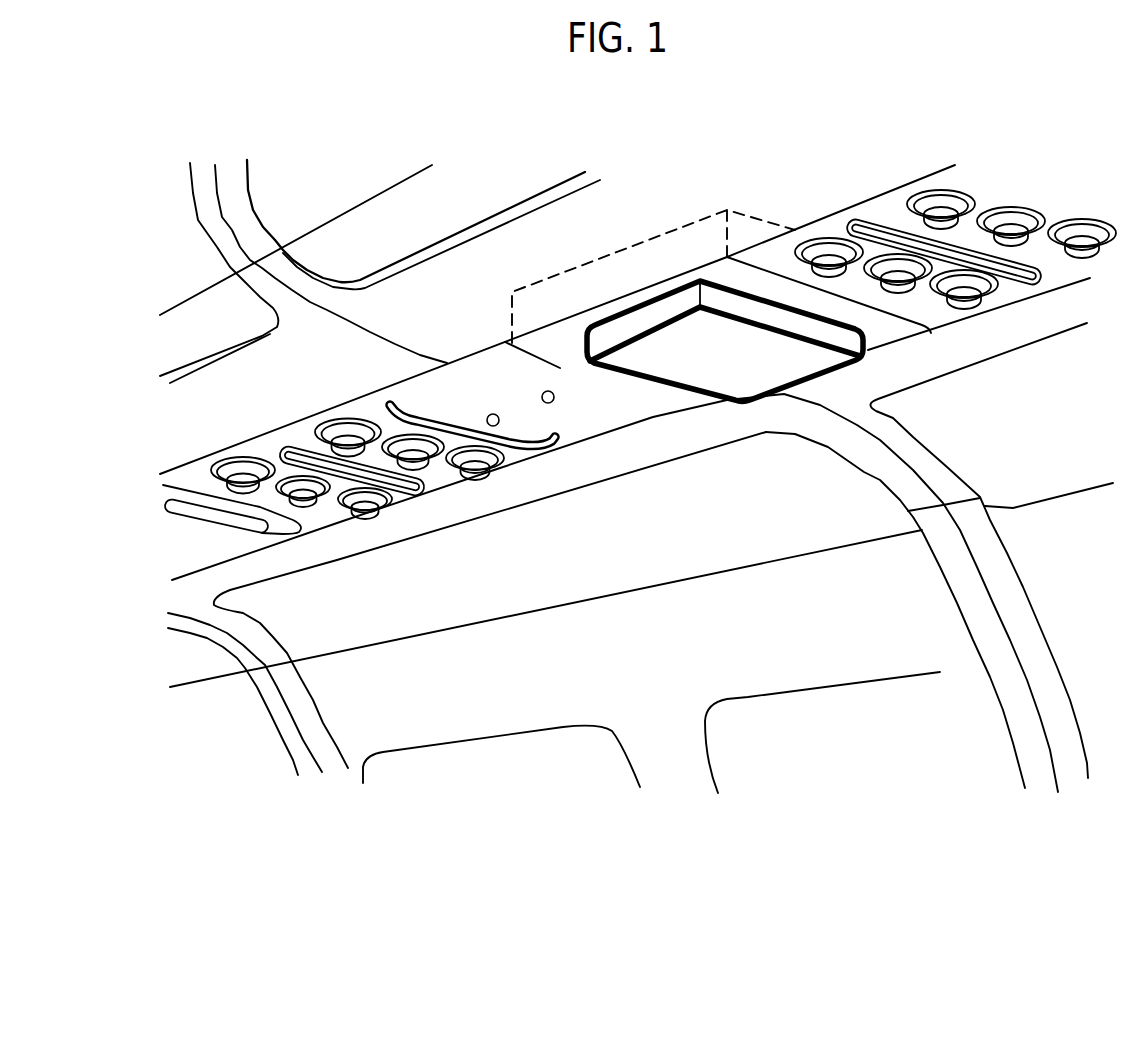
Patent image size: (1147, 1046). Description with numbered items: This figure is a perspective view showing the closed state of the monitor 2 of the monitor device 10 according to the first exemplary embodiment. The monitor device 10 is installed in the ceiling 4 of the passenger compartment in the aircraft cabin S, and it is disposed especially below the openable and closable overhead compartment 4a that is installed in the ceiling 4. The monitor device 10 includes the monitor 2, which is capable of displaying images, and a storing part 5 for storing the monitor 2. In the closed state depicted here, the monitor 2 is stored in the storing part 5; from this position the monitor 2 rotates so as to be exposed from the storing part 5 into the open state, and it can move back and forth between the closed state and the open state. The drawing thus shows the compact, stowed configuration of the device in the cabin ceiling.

The monitor 2 is at (746, 374).
The ceiling 4 is at (527, 427).
The overhead compartment 4a is at (386, 233).
The storing part 5 is at (680, 252).
The monitor device 10 is at (660, 384).
The aircraft cabin S is at (849, 626).